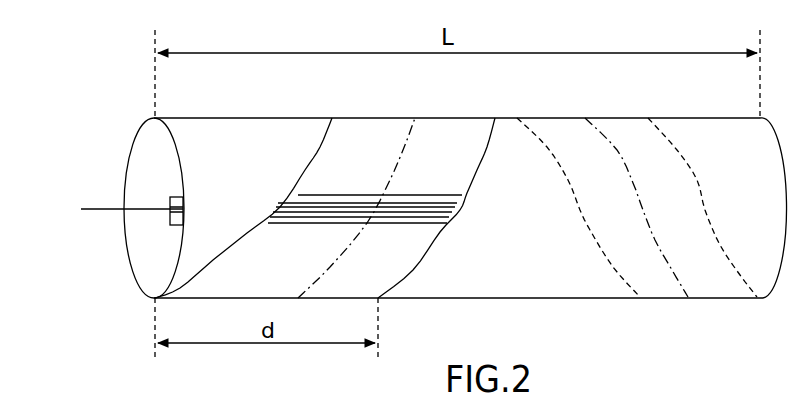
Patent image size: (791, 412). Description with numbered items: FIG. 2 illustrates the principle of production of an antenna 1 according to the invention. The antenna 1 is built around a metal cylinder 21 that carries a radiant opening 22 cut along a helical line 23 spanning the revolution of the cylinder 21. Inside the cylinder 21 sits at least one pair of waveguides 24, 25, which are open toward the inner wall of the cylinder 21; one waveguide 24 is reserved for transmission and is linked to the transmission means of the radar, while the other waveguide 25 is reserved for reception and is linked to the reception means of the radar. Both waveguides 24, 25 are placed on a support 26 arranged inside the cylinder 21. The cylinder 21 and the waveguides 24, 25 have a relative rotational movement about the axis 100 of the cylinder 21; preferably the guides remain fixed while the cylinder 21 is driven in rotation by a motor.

The cylindrical member 1 is at (130, 127).
The metal cylinder 21 is at (675, 298).
The radiant opening 22 is at (438, 127).
The helical line 23 is at (395, 182).
The transmission waveguide 24 is at (338, 195).
The reception waveguide 25 is at (308, 224).
The support 26 is at (170, 208).
The axis of the cylinder 100 is at (103, 212).